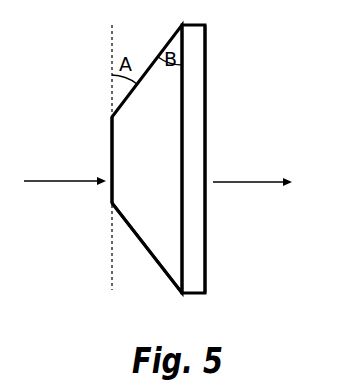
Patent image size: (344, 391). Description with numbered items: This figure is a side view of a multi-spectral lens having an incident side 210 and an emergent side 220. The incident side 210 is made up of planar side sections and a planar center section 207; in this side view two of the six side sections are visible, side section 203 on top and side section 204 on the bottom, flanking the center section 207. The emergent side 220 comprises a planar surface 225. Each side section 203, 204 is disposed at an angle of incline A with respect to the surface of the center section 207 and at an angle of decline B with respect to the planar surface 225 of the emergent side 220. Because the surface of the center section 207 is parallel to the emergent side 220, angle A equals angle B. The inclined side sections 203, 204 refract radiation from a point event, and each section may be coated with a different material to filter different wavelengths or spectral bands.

The side section 203 is at (168, 97).
The side section 204 is at (155, 258).
The center section 207 is at (112, 201).
The planar surface 225 is at (206, 239).
The incident side 210 is at (65, 154).
The emergent side 220 is at (256, 151).